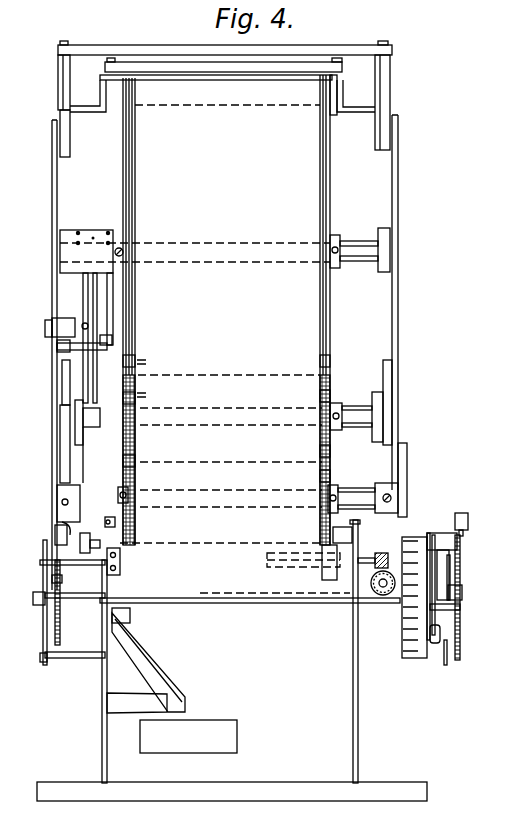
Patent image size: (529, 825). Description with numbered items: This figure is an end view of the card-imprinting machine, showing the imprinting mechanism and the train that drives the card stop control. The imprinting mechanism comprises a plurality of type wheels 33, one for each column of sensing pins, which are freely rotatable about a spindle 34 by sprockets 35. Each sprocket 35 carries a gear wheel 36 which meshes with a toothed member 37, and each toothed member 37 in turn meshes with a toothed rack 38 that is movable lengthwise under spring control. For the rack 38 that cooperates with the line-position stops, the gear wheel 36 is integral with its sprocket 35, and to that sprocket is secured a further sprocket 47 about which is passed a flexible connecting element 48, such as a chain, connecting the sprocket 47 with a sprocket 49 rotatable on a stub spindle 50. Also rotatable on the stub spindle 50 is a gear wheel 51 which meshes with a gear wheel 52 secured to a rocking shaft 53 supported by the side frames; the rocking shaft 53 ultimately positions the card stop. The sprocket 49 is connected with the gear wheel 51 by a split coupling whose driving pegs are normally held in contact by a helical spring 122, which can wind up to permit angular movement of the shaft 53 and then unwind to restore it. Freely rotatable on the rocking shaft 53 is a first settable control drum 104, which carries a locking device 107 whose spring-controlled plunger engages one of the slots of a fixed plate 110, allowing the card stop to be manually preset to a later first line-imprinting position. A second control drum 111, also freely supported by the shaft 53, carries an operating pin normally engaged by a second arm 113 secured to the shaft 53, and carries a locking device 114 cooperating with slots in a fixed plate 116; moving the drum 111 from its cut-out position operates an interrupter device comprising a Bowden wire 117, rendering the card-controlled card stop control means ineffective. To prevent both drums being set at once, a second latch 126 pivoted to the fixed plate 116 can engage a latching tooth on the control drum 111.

The toothed rack 38 is at (322, 165).
The toothed member 37 is at (131, 363).
The gear wheel 36 is at (136, 404).
The sprocket 35 is at (140, 466).
The type wheel 33 is at (322, 476).
The spindle 34 is at (349, 498).
The further sprocket 47 is at (62, 441).
The flexible connecting element 48 is at (72, 457).
The helical spring 122 is at (68, 530).
The gear wheel 51 is at (57, 528).
The sprocket 49 is at (45, 557).
The rocking shaft 53 is at (57, 580).
The gear wheel 52 is at (55, 618).
The stub spindle 50 is at (92, 545).
The fixed plate 110 is at (428, 535).
The second control drum 111 is at (434, 535).
The locking device 114 is at (460, 514).
The fixed plate 116 is at (460, 549).
The second arm 113 is at (450, 568).
The second latch 126 is at (460, 607).
The first settable control drum 104 is at (402, 633).
The locking device 107 is at (432, 645).
The Bowden wire 117 is at (446, 665).